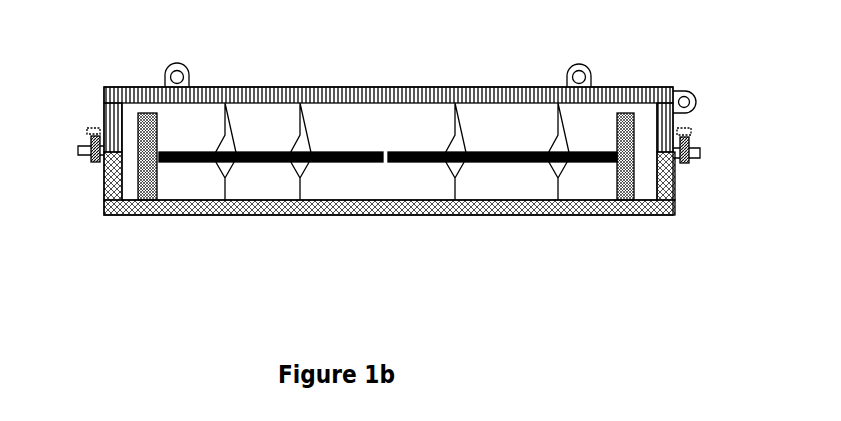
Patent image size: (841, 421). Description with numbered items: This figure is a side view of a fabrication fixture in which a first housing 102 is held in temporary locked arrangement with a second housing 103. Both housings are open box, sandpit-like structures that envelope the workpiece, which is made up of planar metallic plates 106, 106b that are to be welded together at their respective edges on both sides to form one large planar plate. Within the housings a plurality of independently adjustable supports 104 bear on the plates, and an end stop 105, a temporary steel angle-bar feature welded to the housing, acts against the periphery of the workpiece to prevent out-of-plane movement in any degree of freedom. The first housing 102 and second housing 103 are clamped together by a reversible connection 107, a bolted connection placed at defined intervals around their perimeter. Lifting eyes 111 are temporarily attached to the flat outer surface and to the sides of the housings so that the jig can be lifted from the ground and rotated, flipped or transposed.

The first housing 102 is at (386, 87).
The second housing 103 is at (493, 217).
The independently adjustable supports 104 is at (302, 185).
The end stop 105 is at (157, 187).
The planar metallic plate 106 is at (272, 150).
The planar metallic plate 106b is at (502, 150).
The reversible connection 107 is at (690, 142).
The lifting eyes 111 is at (595, 62).